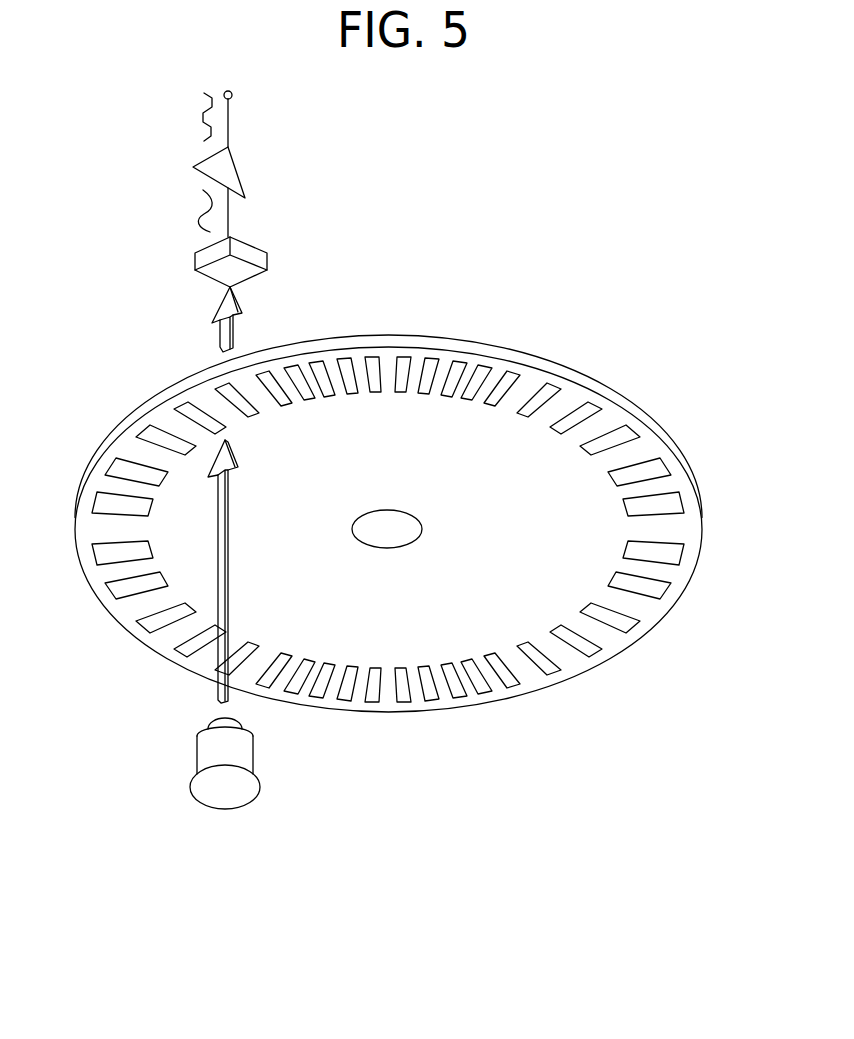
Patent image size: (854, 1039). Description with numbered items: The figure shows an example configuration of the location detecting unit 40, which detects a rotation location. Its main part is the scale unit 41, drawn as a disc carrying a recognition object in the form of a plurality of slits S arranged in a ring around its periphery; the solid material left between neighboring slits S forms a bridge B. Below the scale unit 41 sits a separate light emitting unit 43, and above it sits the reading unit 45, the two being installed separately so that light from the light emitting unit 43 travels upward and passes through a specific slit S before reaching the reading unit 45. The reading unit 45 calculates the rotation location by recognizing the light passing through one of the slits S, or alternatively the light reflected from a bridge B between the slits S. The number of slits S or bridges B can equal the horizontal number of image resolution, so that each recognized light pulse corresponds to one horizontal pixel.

The location detecting unit 40 is at (71, 97).
The scale unit 41 is at (688, 533).
The slit S is at (660, 467).
The bridge B is at (593, 634).
The light emitting unit 43 is at (220, 789).
The reading unit 45 is at (204, 260).